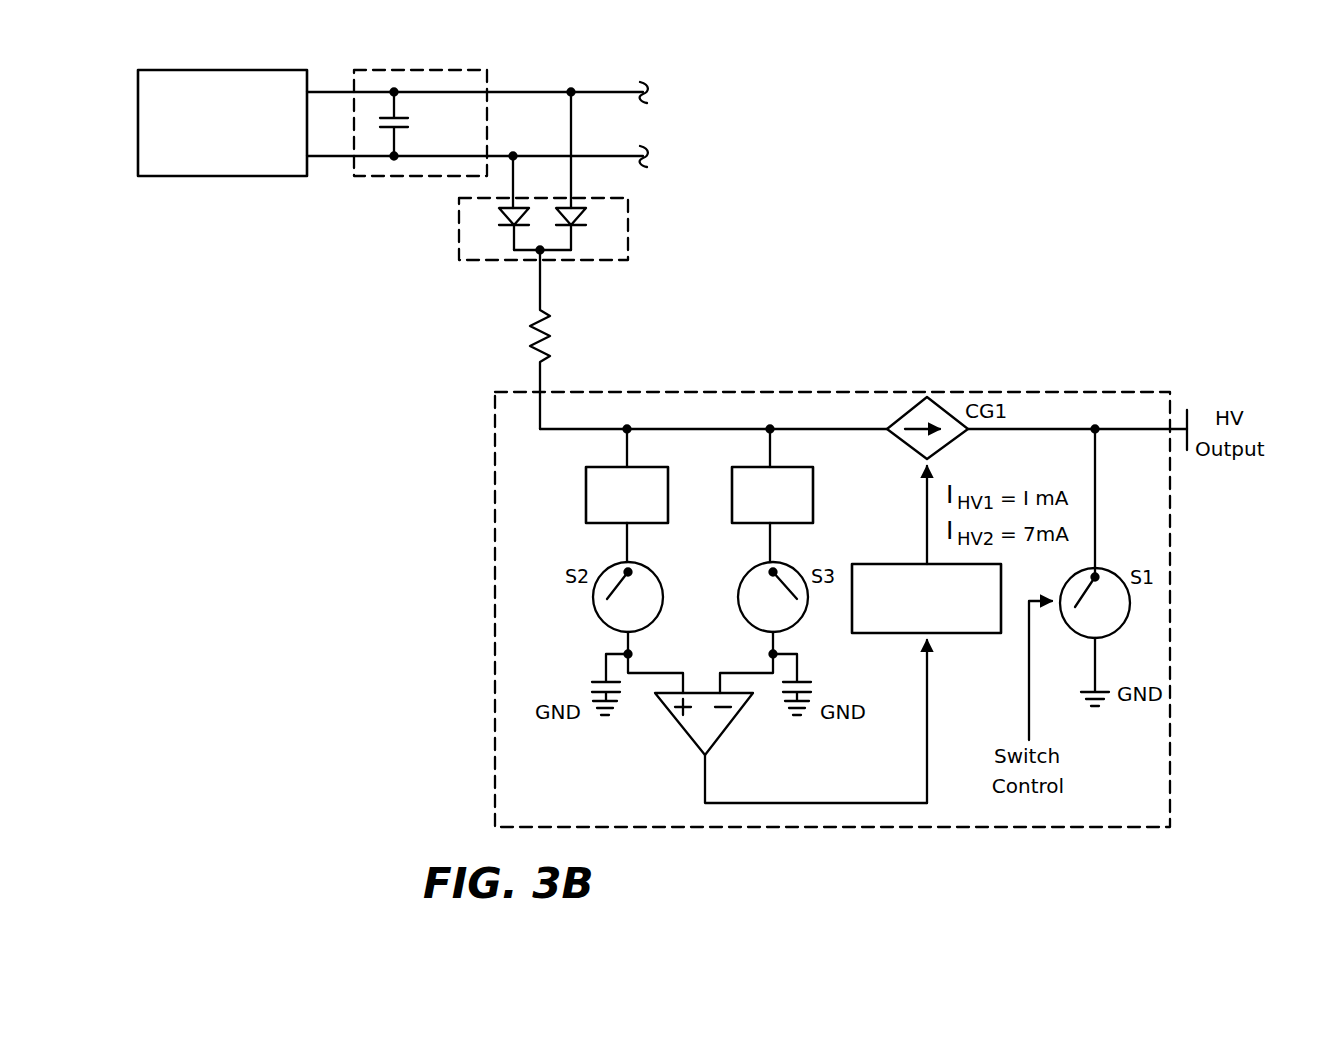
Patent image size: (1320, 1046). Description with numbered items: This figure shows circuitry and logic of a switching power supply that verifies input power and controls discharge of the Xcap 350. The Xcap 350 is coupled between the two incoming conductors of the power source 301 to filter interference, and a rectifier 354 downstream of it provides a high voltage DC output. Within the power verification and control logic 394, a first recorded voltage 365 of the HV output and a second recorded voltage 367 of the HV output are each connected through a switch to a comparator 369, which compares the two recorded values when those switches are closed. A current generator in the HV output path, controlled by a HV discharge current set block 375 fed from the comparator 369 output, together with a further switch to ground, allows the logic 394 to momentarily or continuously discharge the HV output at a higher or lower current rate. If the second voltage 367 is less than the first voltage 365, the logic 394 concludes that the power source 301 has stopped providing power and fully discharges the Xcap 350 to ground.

The power source 301 is at (226, 70).
The Xcap 350 is at (420, 70).
The rectifier 354 is at (628, 255).
The power verification and control logic 394 is at (745, 392).
The voltage VHV1 365 is at (586, 497).
The voltage VHV2 367 is at (813, 497).
The comparator 369 is at (685, 733).
The HV discharge current set circuit 375 is at (985, 633).